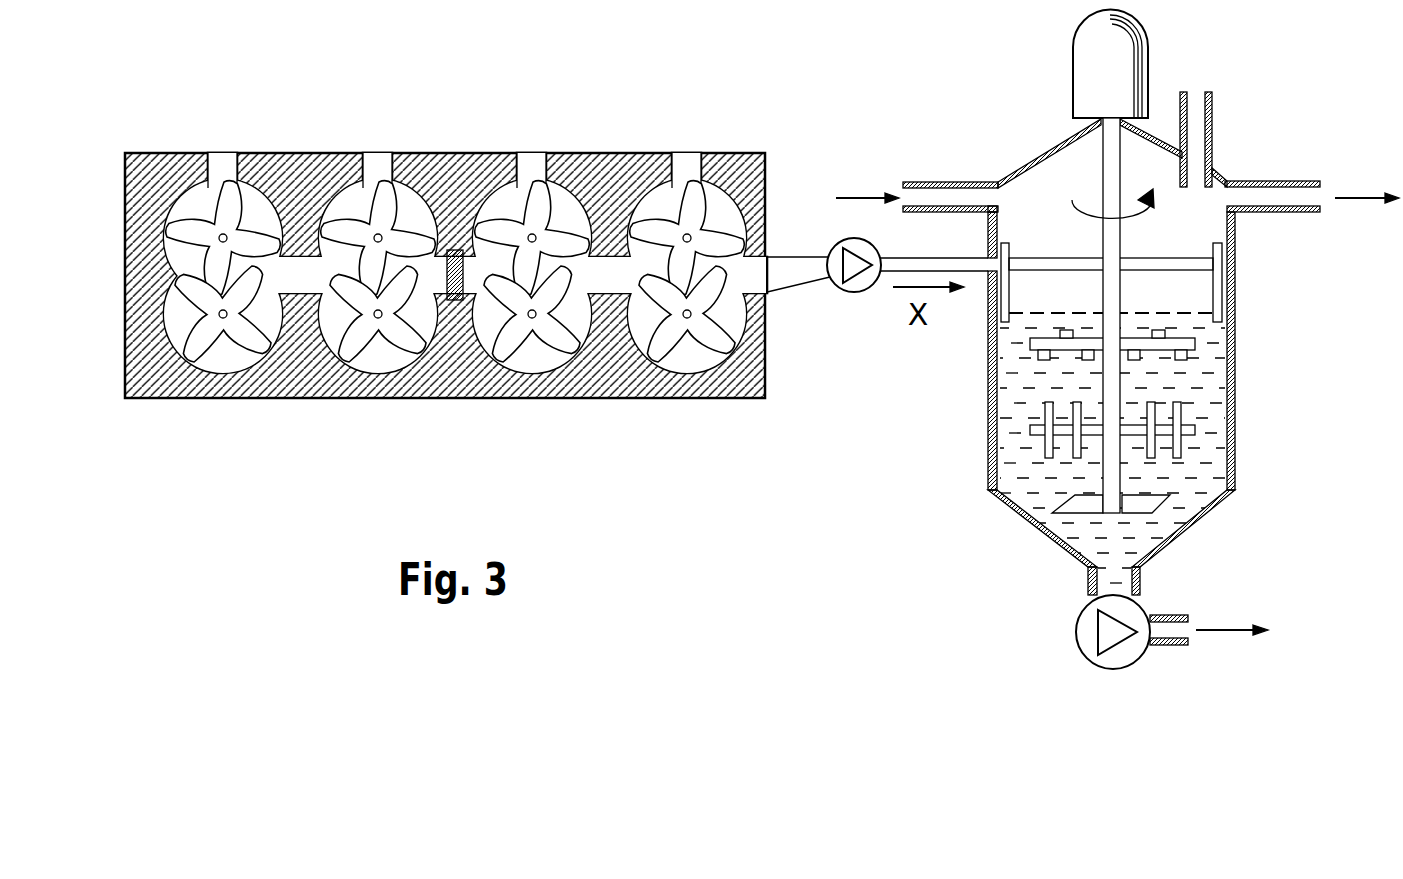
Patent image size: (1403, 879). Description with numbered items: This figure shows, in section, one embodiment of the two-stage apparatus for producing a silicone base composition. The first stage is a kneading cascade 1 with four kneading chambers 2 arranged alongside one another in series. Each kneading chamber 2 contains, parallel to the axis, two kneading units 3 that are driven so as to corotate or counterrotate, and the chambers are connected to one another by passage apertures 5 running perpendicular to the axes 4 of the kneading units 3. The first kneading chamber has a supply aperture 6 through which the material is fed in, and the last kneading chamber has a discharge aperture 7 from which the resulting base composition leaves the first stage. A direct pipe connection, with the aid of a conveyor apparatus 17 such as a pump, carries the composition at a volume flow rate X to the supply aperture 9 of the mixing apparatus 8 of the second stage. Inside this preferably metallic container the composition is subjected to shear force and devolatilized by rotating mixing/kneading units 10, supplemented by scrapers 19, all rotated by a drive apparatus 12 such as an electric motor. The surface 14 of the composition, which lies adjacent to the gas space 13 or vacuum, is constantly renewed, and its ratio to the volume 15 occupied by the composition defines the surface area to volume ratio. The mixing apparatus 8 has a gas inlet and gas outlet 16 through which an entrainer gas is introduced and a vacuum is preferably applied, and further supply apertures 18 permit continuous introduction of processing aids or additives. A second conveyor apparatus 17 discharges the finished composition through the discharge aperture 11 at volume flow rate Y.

The kneading cascade 1 is at (152, 160).
The kneading chamber 2 is at (222, 353).
The kneading unit 3 is at (260, 188).
The axis 4 is at (219, 243).
The passage aperture 5 is at (292, 276).
The supply aperture 6 is at (222, 172).
The discharge aperture 7 is at (765, 265).
The mixing apparatus 8 is at (1235, 244).
The supply aperture 9 is at (990, 268).
The mixing/kneading unit 10 is at (1190, 346).
The discharge aperture 11 is at (1188, 632).
The drive apparatus 12 is at (1128, 42).
The gas space 13 is at (1190, 232).
The surface 14 is at (1048, 312).
The volume 15 is at (1030, 400).
The gas inlet and gas outlet 16 is at (852, 196).
The conveyor apparatus 17 is at (847, 285).
The further supply aperture 18 is at (1196, 112).
The scraper 19 is at (1222, 299).